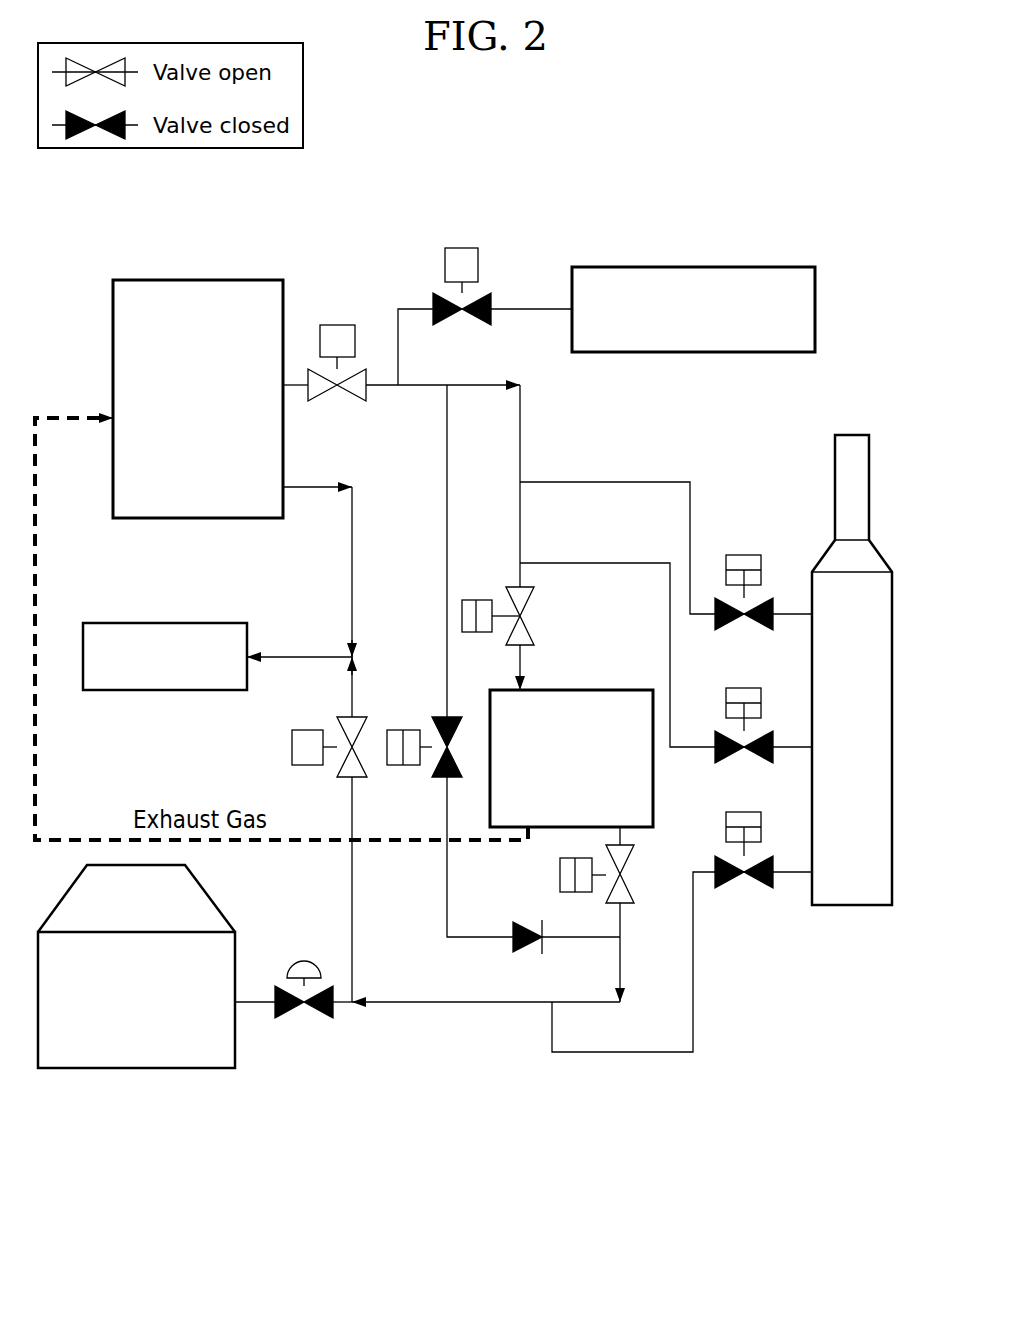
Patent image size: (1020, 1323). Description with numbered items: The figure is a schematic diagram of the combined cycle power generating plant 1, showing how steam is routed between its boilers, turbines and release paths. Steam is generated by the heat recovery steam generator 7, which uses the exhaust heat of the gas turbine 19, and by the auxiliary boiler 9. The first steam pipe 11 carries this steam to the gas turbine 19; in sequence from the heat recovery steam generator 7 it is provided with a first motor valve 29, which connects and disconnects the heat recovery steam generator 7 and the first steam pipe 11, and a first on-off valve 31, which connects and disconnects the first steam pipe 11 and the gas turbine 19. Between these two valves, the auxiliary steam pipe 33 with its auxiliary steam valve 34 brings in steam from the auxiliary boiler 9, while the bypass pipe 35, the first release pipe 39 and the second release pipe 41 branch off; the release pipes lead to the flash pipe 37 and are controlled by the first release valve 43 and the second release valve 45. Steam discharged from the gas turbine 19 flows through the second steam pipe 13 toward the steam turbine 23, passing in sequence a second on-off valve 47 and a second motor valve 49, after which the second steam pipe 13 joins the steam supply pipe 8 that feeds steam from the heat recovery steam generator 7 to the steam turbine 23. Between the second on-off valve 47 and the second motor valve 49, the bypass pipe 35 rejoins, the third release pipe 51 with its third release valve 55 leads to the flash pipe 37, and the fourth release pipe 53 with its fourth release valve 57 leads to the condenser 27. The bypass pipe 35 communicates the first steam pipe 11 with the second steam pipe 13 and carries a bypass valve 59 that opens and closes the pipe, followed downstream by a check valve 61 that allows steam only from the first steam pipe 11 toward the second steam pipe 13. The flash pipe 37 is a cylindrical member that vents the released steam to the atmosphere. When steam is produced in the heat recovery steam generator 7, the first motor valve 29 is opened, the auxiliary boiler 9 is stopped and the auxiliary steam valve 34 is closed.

The combined cycle power generating plant 1 is at (830, 122).
The heat recovery steam generator 7 is at (191, 280).
The steam supply pipe 8 is at (352, 568).
The auxiliary boiler 9 is at (697, 267).
The first steam pipe 11 is at (520, 422).
The second steam pipe 13 is at (445, 1002).
The gas turbine 19 is at (590, 690).
The steam turbine 23 is at (133, 623).
The condenser 27 is at (138, 1068).
The first motor valve 29 is at (333, 325).
The first on-off valve 31 is at (464, 600).
The auxiliary steam pipe 33 is at (537, 309).
The auxiliary steam valve 34 is at (458, 248).
The bypass pipe 35 is at (447, 438).
The flash pipe 37 is at (860, 905).
The first release pipe 39 is at (670, 482).
The second release pipe 41 is at (620, 563).
The first release valve 43 is at (740, 555).
The second release valve 45 is at (748, 688).
The second on-off valve 47 is at (560, 872).
The second motor valve 49 is at (292, 746).
The third release pipe 51 is at (627, 1052).
The fourth release pipe 53 is at (260, 1002).
The third release valve 55 is at (742, 890).
The fourth release valve 57 is at (300, 962).
The bypass valve 59 is at (391, 730).
The check valve 61 is at (513, 943).